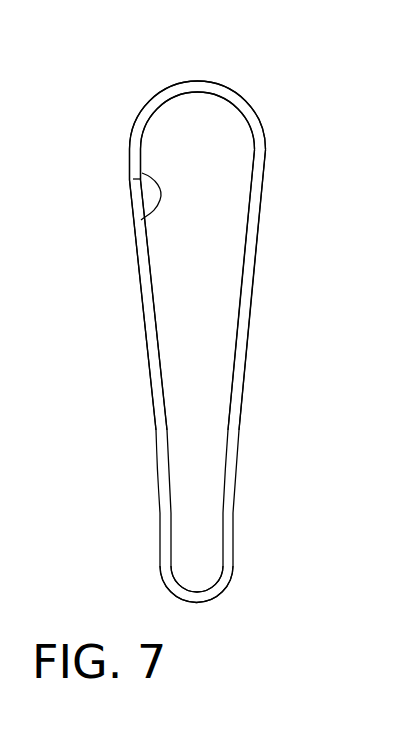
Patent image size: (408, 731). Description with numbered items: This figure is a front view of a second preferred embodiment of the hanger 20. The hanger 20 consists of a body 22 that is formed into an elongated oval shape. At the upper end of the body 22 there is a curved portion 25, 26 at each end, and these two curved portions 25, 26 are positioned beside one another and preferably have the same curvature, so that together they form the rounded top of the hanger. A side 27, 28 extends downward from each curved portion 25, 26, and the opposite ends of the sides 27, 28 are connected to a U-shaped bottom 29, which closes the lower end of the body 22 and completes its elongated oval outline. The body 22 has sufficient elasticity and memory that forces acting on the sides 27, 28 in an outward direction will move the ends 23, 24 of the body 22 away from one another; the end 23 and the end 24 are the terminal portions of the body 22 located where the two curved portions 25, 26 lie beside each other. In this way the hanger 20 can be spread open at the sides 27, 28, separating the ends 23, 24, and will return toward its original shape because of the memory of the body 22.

The hanger 20 is at (143, 83).
The body 22 is at (130, 223).
The end 23 is at (258, 209).
The end 24 is at (141, 220).
The curved portion 25 is at (129, 150).
The curved portion 26 is at (247, 108).
The side 27 is at (147, 356).
The side 28 is at (247, 355).
The U-shaped bottom 29 is at (202, 603).